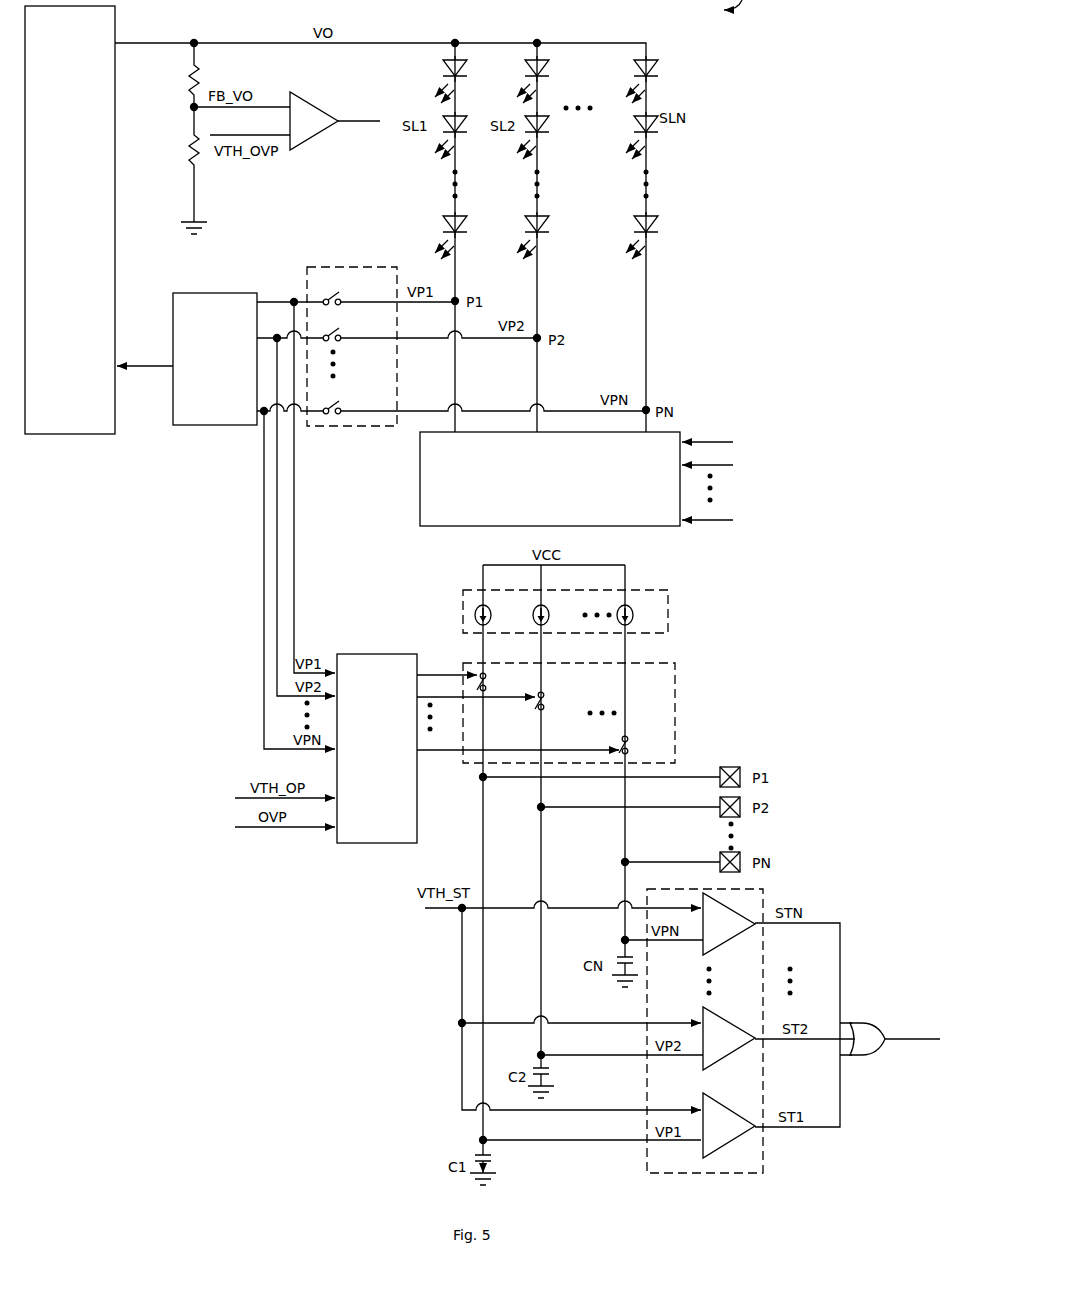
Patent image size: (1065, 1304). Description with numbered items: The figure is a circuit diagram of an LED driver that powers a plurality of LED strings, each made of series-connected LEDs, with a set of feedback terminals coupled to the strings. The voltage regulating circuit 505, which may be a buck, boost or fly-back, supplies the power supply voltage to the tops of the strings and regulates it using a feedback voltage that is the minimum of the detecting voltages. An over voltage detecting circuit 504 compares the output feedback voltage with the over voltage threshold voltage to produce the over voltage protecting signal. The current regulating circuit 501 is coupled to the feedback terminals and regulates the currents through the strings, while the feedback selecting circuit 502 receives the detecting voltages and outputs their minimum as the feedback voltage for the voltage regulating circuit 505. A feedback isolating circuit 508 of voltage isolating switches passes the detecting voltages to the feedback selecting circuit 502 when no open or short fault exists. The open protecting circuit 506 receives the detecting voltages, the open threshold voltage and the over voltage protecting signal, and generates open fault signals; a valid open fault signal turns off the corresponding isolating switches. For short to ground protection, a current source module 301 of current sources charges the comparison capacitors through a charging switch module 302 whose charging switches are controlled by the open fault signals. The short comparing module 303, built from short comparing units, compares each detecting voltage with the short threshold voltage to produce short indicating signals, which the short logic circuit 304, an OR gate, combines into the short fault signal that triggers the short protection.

The voltage regulating circuit 505 is at (70, 220).
The over voltage detecting circuit 504 is at (317, 150).
The feedback selecting circuit 502 is at (191, 428).
The feedback isolating circuit 508 is at (334, 430).
The current regulating circuit 501 is at (576, 476).
The open protecting circuit 506 is at (398, 845).
The current source module 301 is at (670, 622).
The charging switch module 302 is at (678, 730).
The short comparing module 303 is at (766, 1164).
The short logic circuit 304 is at (864, 1058).